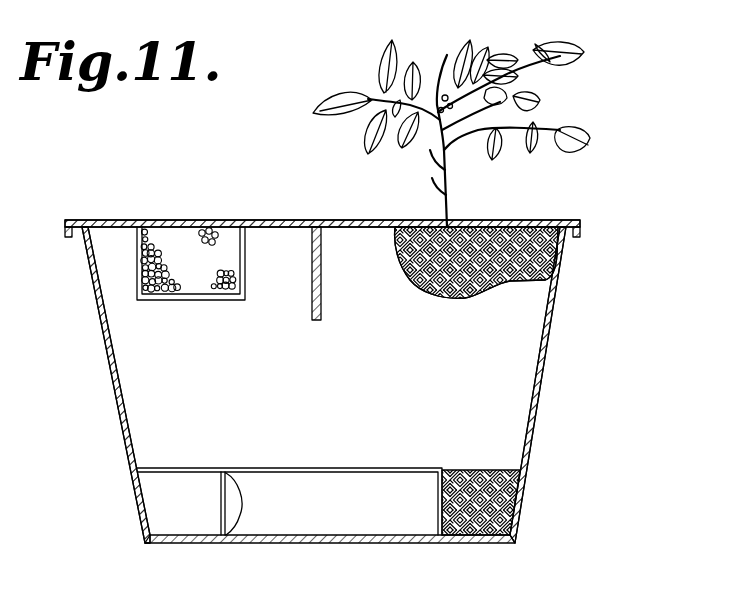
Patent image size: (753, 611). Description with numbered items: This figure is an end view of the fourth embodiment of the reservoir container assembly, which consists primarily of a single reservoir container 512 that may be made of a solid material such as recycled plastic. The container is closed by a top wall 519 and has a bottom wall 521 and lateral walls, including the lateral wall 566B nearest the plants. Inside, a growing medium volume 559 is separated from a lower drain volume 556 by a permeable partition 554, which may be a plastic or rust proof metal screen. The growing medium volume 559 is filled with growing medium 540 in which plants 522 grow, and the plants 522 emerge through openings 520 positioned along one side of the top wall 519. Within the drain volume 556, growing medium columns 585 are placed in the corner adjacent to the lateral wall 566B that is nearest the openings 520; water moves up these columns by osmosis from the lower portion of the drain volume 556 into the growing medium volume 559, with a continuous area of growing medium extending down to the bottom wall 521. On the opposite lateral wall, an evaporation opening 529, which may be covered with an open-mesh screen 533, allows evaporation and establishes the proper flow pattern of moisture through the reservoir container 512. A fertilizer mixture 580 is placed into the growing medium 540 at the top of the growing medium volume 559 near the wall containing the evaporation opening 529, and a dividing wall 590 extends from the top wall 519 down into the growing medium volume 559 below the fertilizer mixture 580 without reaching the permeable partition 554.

The reservoir container 512 is at (66, 218).
The top wall 519 is at (275, 220).
The screen 533 is at (86, 261).
The evaporation opening 529 is at (79, 279).
The bottom wall 521 is at (413, 540).
The lateral wall 566B is at (545, 348).
The growing medium volume 559 is at (517, 418).
The fertilizer mixture 580 is at (163, 236).
The dividing wall 590 is at (300, 248).
The growing medium 540 is at (547, 263).
The openings 520 is at (484, 200).
The plants 522 is at (452, 182).
The drain volume 556 is at (158, 498).
The permeable partition 554 is at (222, 540).
The growing medium columns 585 is at (507, 510).